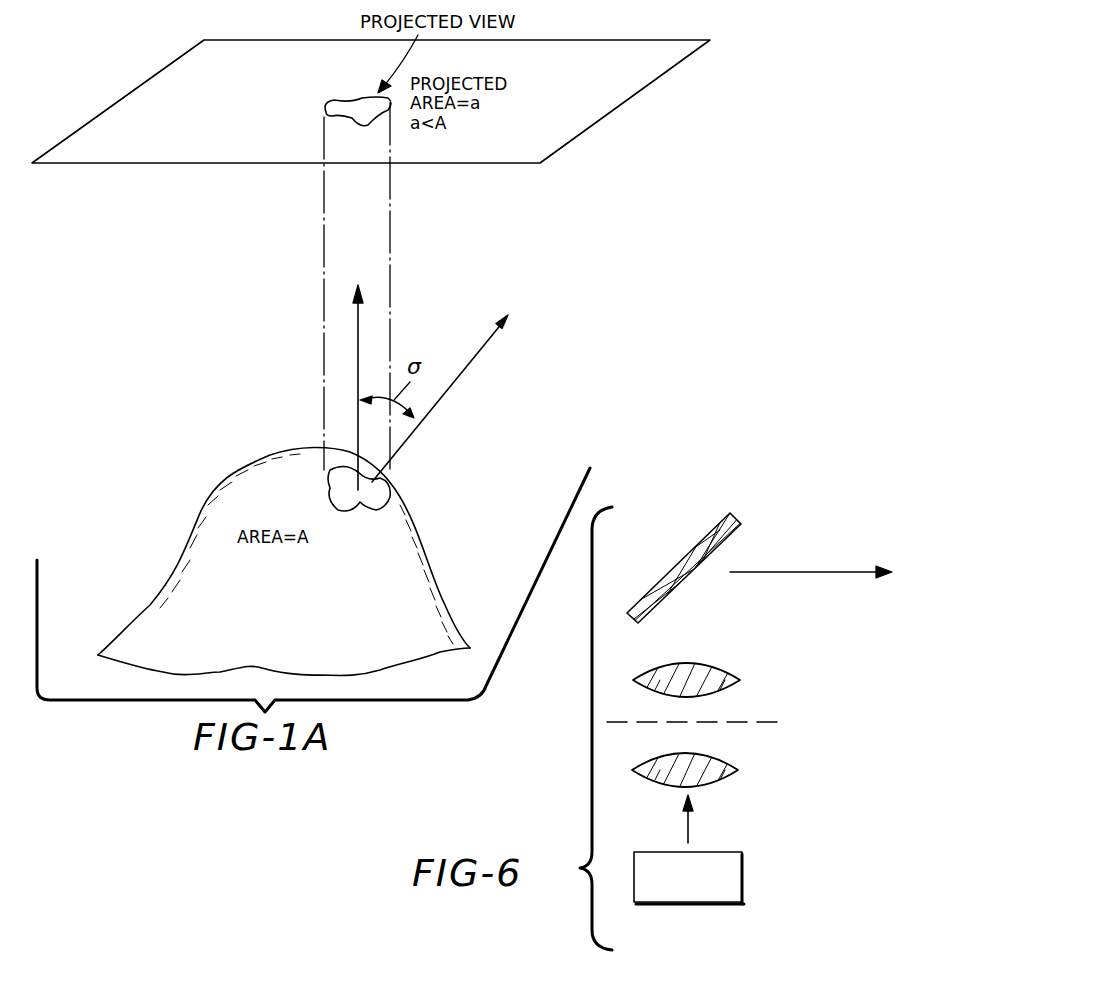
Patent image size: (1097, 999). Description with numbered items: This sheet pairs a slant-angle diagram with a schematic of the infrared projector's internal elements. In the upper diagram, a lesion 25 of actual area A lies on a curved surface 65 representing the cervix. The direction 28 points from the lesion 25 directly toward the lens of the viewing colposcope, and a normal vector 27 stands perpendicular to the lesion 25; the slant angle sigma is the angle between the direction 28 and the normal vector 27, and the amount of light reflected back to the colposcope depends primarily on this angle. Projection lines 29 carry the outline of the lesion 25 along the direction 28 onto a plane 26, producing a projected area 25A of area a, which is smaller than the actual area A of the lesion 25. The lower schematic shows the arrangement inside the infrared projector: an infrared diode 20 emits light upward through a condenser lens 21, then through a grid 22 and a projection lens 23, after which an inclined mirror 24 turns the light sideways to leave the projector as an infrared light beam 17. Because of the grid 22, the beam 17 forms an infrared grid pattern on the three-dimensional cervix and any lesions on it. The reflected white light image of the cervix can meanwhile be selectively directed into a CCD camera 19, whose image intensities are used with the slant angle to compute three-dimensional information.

In FIG. 1A, the projected area of spot 25A is at (334, 100).
In FIG. 1A, the projection plane 26 is at (577, 123).
In FIG. 1A, the projection lines 29 is at (390, 180).
In FIG. 1A, the direction 28 is at (357, 356).
In FIG. 1A, the normal vector 27 is at (453, 387).
In FIG. 1A, the curved surface 65 is at (195, 490).
In FIG. 1A, the lesion 25 is at (360, 508).
In FIG. 6, the inclined mirror 24 is at (733, 530).
In FIG. 6, the infrared light beam 17 is at (811, 572).
In FIG. 6, the projection lens 23 is at (717, 665).
In FIG. 6, the grid 22 is at (740, 721).
In FIG. 6, the condenser lens 21 is at (730, 773).
In FIG. 6, the infrared diode 20 is at (730, 851).
In FIG. 6, the CCD camera 19 is at (830, 835).